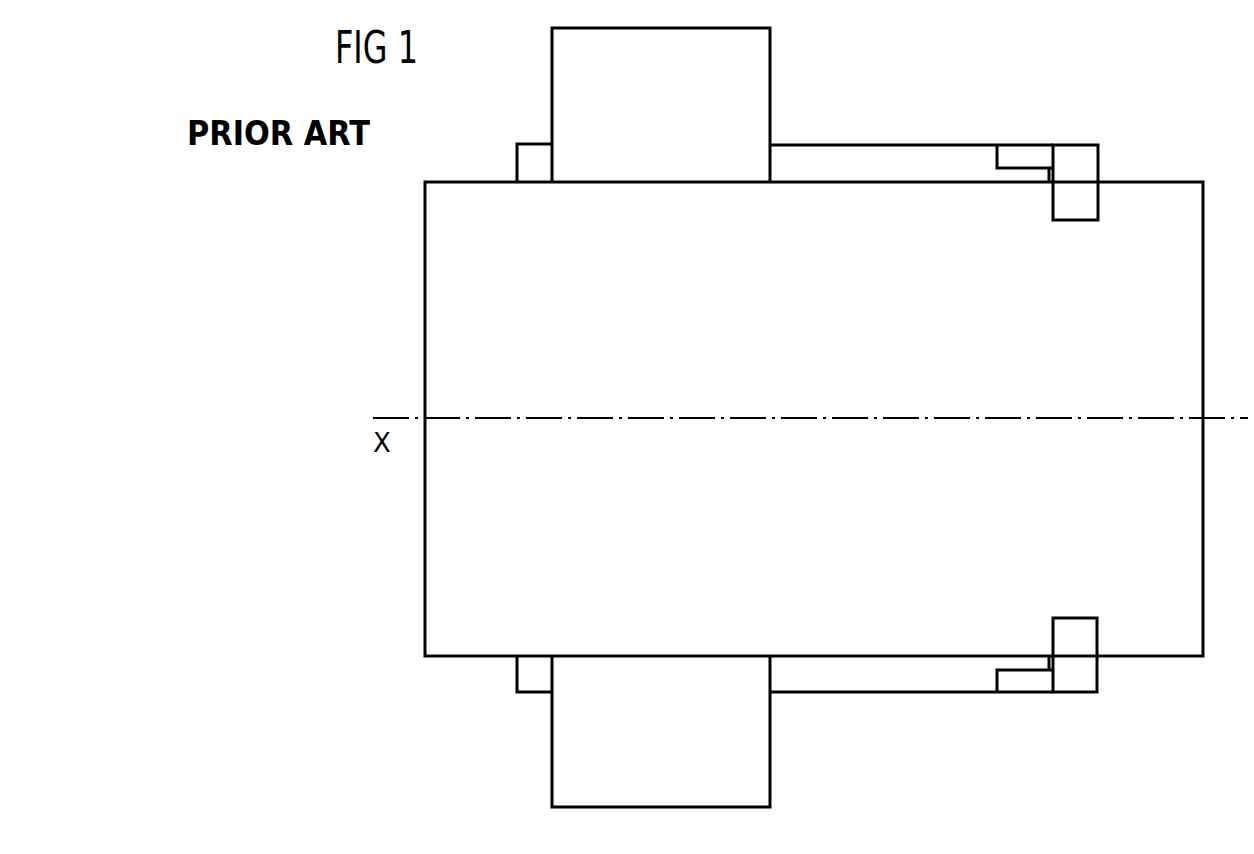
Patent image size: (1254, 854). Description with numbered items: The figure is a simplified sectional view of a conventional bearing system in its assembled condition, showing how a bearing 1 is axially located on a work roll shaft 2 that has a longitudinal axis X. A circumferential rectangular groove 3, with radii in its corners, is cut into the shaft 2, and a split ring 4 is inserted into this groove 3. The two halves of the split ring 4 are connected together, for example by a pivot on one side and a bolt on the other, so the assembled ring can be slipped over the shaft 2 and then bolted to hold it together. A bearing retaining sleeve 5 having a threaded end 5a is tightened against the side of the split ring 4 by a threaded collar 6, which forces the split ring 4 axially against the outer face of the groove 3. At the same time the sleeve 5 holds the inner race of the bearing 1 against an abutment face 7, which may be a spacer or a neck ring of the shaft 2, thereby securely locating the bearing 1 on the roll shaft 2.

The bearing 1 is at (760, 82).
The work roll shaft 2 is at (1195, 311).
The circumferential rectangular groove 3 is at (1098, 631).
The split ring 4 is at (1088, 160).
The bearing retaining sleeve 5 is at (893, 158).
The threaded end 5a is at (1018, 175).
The threaded collar 6 is at (1024, 682).
The abutment face 7 is at (532, 683).